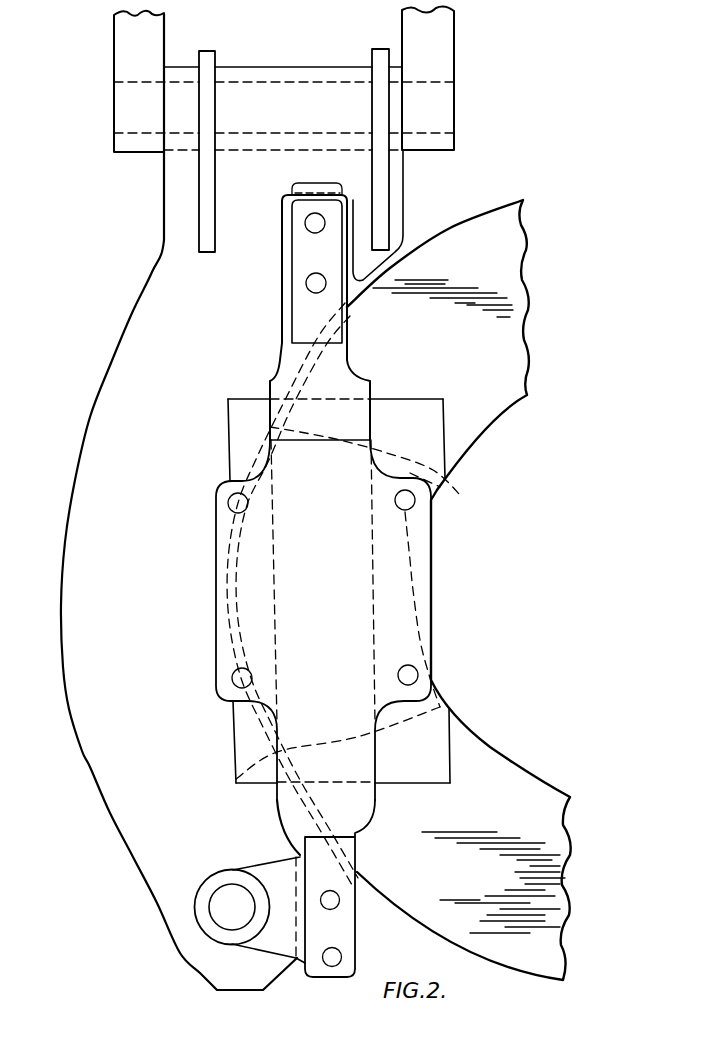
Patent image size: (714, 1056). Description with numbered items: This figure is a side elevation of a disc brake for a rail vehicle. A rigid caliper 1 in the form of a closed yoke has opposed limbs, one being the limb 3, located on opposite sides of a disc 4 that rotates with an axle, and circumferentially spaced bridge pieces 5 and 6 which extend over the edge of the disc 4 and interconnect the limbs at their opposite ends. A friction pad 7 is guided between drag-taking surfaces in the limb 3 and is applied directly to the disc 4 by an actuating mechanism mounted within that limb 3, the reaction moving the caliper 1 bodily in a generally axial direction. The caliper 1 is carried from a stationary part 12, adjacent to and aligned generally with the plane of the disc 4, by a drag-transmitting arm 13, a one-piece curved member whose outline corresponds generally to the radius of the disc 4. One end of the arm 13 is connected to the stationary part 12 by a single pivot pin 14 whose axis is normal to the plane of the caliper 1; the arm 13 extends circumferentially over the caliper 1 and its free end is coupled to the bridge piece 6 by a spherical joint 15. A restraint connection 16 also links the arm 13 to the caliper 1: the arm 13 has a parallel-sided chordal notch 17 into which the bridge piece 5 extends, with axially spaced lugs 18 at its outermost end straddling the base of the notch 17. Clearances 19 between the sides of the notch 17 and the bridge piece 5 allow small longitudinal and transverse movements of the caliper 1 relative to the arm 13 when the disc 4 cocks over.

The caliper 1 is at (345, 794).
The limb 3 is at (355, 753).
The disc 4 is at (500, 363).
The bridge piece 5 is at (313, 257).
The bridge piece 6 is at (327, 922).
The friction pad 7 is at (442, 481).
The stationary part 12 is at (138, 45).
The drag-transmitting arm 13 is at (88, 600).
The pivot pin 14 is at (143, 115).
The spherical joint 15 is at (227, 917).
The restraint connection 16 is at (291, 193).
The notch 17 is at (282, 299).
The lugs 18 is at (311, 190).
The clearances 19 is at (348, 232).